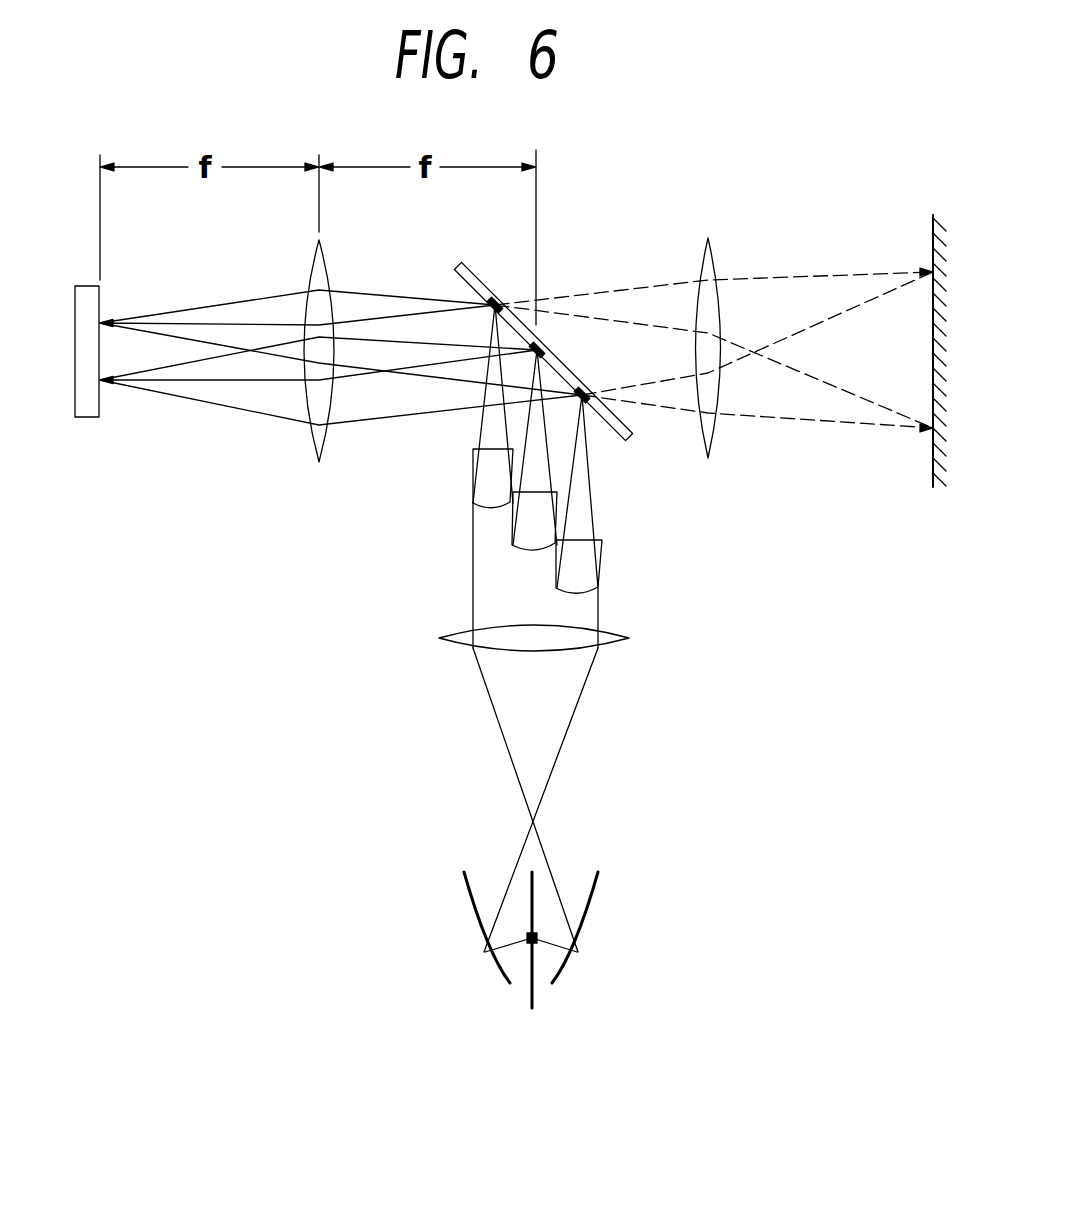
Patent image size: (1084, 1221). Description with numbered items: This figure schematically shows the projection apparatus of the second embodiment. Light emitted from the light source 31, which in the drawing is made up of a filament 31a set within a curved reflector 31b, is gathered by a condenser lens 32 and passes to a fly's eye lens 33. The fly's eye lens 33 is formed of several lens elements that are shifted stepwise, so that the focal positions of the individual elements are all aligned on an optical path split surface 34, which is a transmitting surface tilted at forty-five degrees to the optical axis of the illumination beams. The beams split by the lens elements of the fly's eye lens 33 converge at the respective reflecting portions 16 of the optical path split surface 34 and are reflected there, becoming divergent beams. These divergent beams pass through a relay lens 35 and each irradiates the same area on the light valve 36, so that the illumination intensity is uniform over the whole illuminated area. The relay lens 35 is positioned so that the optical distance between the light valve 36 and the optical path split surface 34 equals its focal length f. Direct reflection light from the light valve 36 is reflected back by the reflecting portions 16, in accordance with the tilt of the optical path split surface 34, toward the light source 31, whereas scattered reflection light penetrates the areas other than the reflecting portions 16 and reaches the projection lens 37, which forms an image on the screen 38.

The reflecting portions 16 is at (580, 394).
The light source 31 is at (524, 936).
The filament 31a is at (532, 1002).
The reflector 31b is at (468, 920).
The condenser lens 32 is at (610, 638).
The fly's eye lens 33 is at (647, 453).
The optical path split surface 34 is at (470, 272).
The relay lens 35 is at (318, 438).
The light valve 36 is at (88, 408).
The projection lens 37 is at (712, 262).
The screen 38 is at (933, 447).